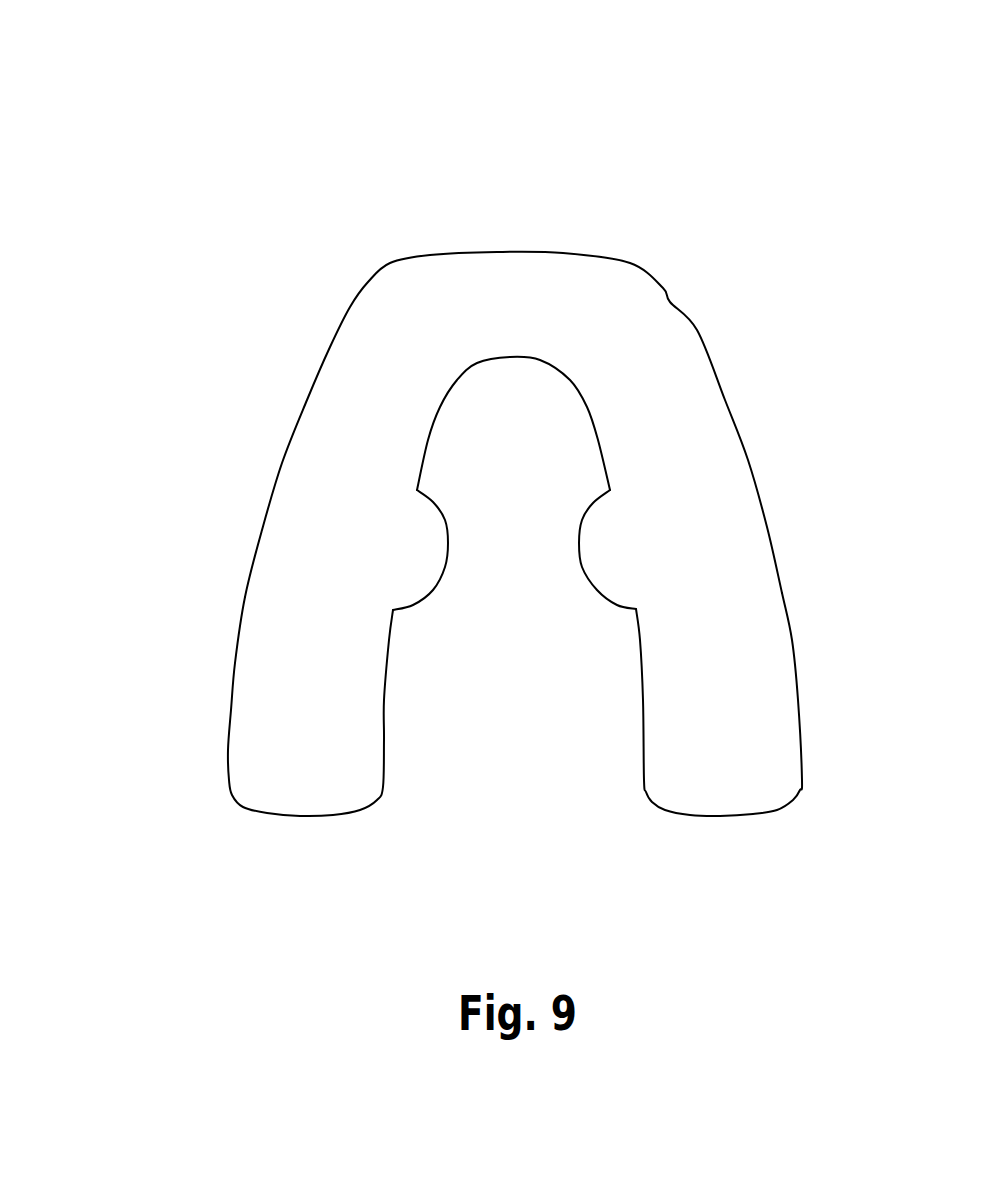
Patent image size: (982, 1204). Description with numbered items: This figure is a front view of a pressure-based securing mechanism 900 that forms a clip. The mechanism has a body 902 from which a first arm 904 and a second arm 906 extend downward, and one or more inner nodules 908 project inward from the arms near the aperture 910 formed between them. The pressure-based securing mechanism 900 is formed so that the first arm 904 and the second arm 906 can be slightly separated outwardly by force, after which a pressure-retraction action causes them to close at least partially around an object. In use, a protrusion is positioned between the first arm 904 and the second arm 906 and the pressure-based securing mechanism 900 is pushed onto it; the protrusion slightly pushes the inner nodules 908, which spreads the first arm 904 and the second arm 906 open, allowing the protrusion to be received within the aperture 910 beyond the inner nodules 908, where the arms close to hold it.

The pressure-based securing mechanism 900 is at (187, 63).
The body 902 is at (508, 252).
The first arm 904 is at (270, 782).
The second arm 906 is at (732, 780).
The inner nodules 908 is at (593, 572).
The aperture 910 is at (525, 468).